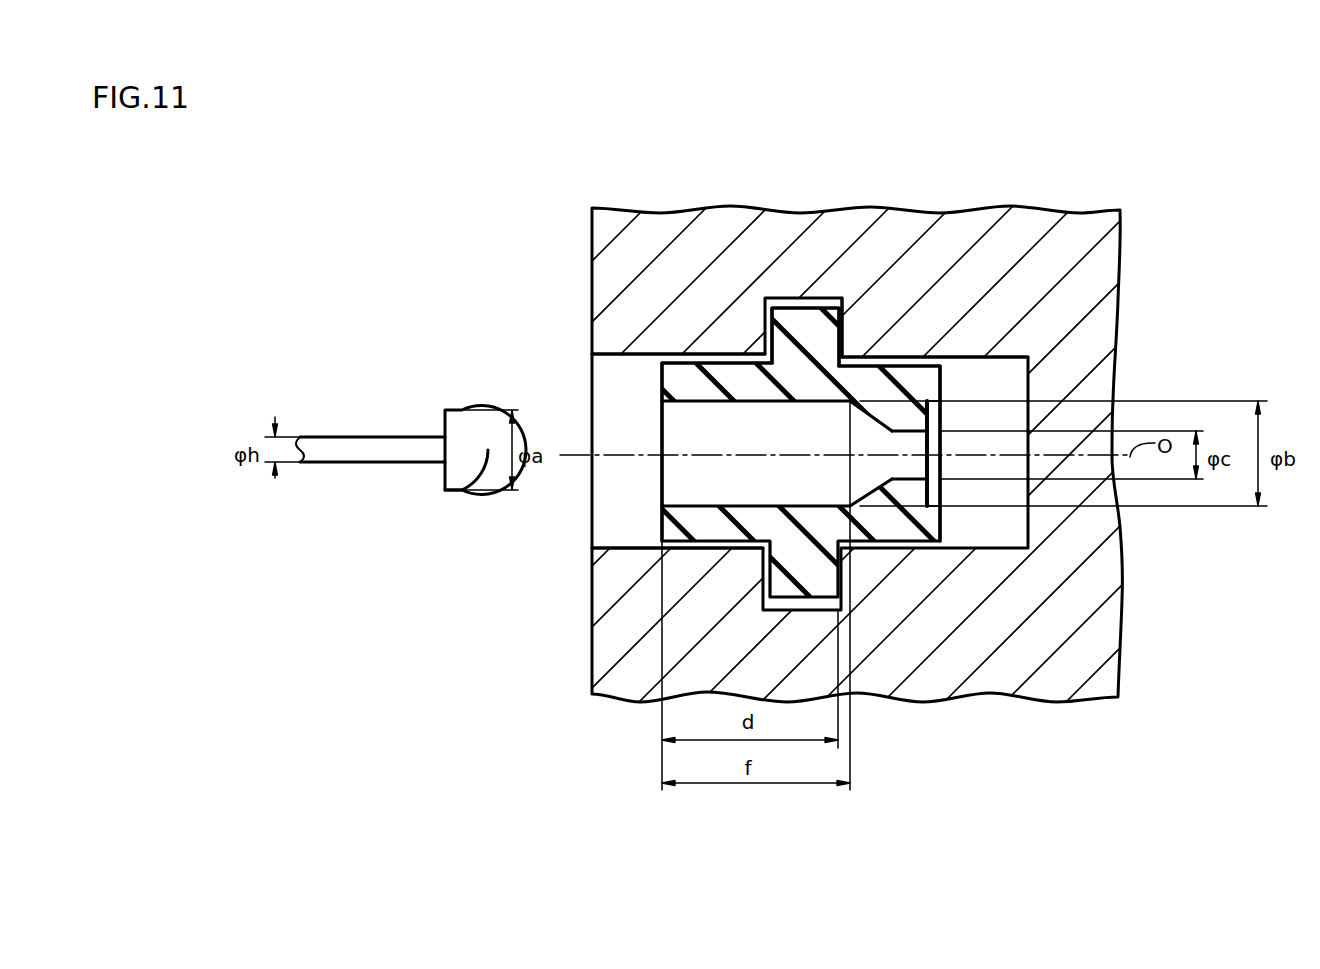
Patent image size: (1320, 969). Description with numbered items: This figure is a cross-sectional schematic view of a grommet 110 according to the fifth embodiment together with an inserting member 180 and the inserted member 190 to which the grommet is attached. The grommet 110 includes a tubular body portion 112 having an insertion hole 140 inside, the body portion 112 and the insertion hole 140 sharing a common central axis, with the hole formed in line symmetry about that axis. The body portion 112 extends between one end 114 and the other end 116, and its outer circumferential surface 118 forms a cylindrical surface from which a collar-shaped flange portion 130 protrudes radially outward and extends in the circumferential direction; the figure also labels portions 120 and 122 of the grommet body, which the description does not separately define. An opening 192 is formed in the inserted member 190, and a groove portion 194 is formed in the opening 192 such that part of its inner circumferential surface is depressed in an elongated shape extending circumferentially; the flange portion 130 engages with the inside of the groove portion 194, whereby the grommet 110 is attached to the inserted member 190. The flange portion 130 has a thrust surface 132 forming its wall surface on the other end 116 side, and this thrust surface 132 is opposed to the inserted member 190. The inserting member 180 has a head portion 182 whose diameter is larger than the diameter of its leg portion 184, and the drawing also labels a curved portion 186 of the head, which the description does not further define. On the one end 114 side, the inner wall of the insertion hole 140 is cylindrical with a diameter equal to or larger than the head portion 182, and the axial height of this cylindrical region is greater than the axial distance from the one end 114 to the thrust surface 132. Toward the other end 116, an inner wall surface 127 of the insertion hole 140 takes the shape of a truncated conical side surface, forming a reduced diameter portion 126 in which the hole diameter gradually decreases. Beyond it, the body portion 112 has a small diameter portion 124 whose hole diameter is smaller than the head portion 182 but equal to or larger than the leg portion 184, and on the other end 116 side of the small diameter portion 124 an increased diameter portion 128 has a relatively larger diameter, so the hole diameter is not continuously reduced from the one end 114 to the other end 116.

The grommet 110 is at (757, 385).
The body portion 112 is at (722, 380).
The one end 114 is at (640, 384).
The other end 116 is at (940, 382).
The outer circumferential surface 118 is at (807, 337).
The small-diameter portion 120 is at (702, 383).
The plate portion 122 is at (917, 428).
The small diameter portion 124 is at (942, 378).
The reduced diameter portion 126 is at (905, 425).
The inner wall surface 127 is at (863, 488).
The increased diameter portion 128 is at (940, 413).
The flange portion 130 is at (842, 337).
The thrust surface 132 is at (855, 333).
The insertion hole 140 is at (683, 428).
The inserting member 180 is at (411, 444).
The head portion 182 is at (453, 428).
The leg portion 184 is at (328, 450).
The curved surface 186 is at (442, 452).
The inserted member 190 is at (795, 263).
The opening 192 is at (633, 538).
The groove portion 194 is at (756, 370).